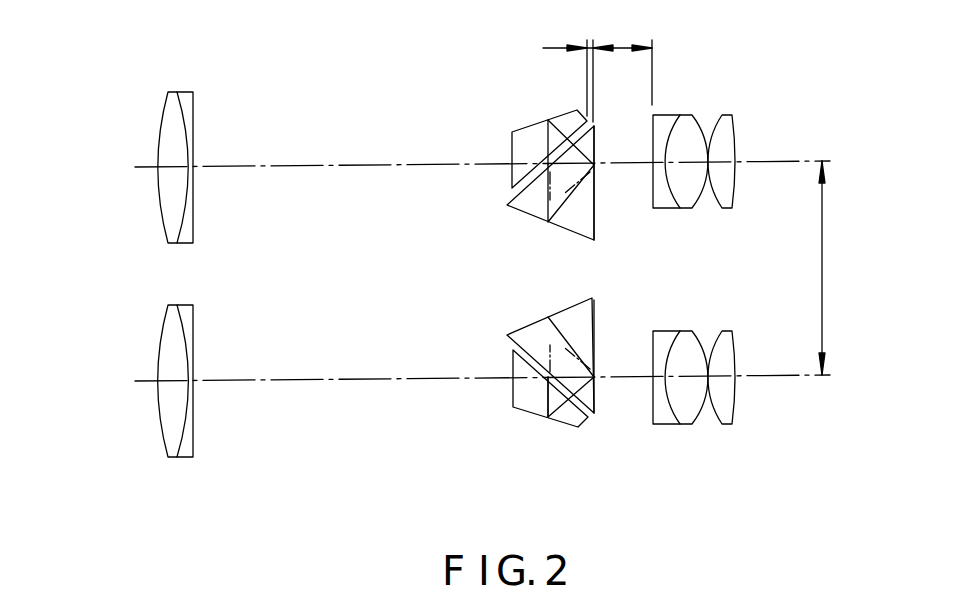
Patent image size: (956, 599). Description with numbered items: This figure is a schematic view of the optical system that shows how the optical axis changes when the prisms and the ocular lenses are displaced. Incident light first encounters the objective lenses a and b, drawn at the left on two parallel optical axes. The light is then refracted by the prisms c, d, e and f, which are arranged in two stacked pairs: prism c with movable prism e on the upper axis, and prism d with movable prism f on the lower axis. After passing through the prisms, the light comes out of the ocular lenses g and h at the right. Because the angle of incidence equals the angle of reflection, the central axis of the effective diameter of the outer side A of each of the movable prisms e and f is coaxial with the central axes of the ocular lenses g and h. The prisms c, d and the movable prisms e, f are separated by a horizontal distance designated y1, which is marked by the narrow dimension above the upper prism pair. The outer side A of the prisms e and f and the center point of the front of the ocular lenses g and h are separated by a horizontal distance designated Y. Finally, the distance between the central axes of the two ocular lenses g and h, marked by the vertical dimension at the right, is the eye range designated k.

The objective lens a is at (155, 118).
The objective lens b is at (152, 338).
The prism c is at (520, 127).
The prism d is at (528, 422).
The movable prism e is at (522, 214).
The movable prism f is at (522, 330).
The ocular lens g is at (698, 113).
The ocular lens h is at (698, 433).
The outer side of the prisms A is at (596, 212).
The eye range k is at (810, 268).
The horizontal distance between prisms y1 is at (578, 64).
The horizontal distance to ocular lenses Y is at (622, 57).